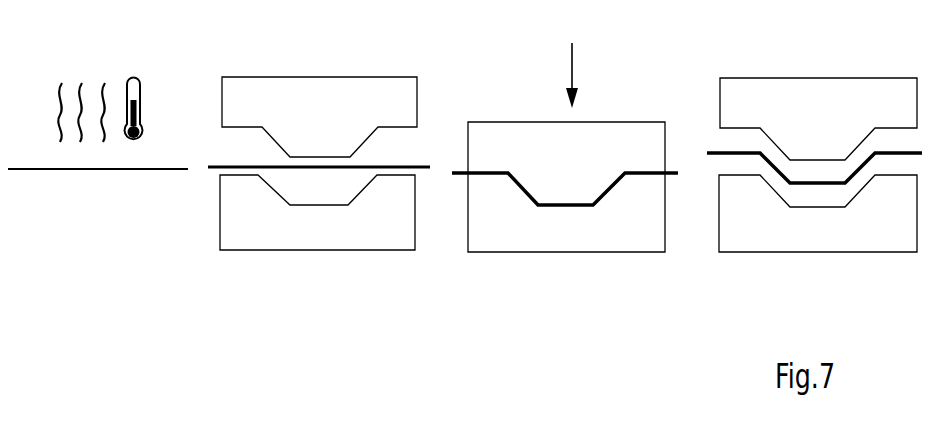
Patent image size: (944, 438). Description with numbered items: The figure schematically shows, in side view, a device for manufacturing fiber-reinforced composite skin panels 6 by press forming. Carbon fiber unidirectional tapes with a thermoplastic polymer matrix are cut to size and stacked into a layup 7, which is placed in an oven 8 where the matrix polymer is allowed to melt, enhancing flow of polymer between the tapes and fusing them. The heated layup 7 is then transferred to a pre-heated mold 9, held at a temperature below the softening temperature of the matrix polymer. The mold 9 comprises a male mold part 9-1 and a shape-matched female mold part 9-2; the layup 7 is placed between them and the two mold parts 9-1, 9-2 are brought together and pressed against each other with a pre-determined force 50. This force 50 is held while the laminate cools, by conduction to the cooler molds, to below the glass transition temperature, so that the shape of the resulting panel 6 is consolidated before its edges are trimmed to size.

The fiber-reinforced composite skin panel 6 is at (830, 185).
The layup 7 is at (98, 170).
The oven 8 is at (84, 64).
The mold 9 is at (360, 60).
The male mold part 9-1 is at (250, 88).
The female mold part 9-2 is at (270, 228).
The pre-determined force 50 is at (572, 43).